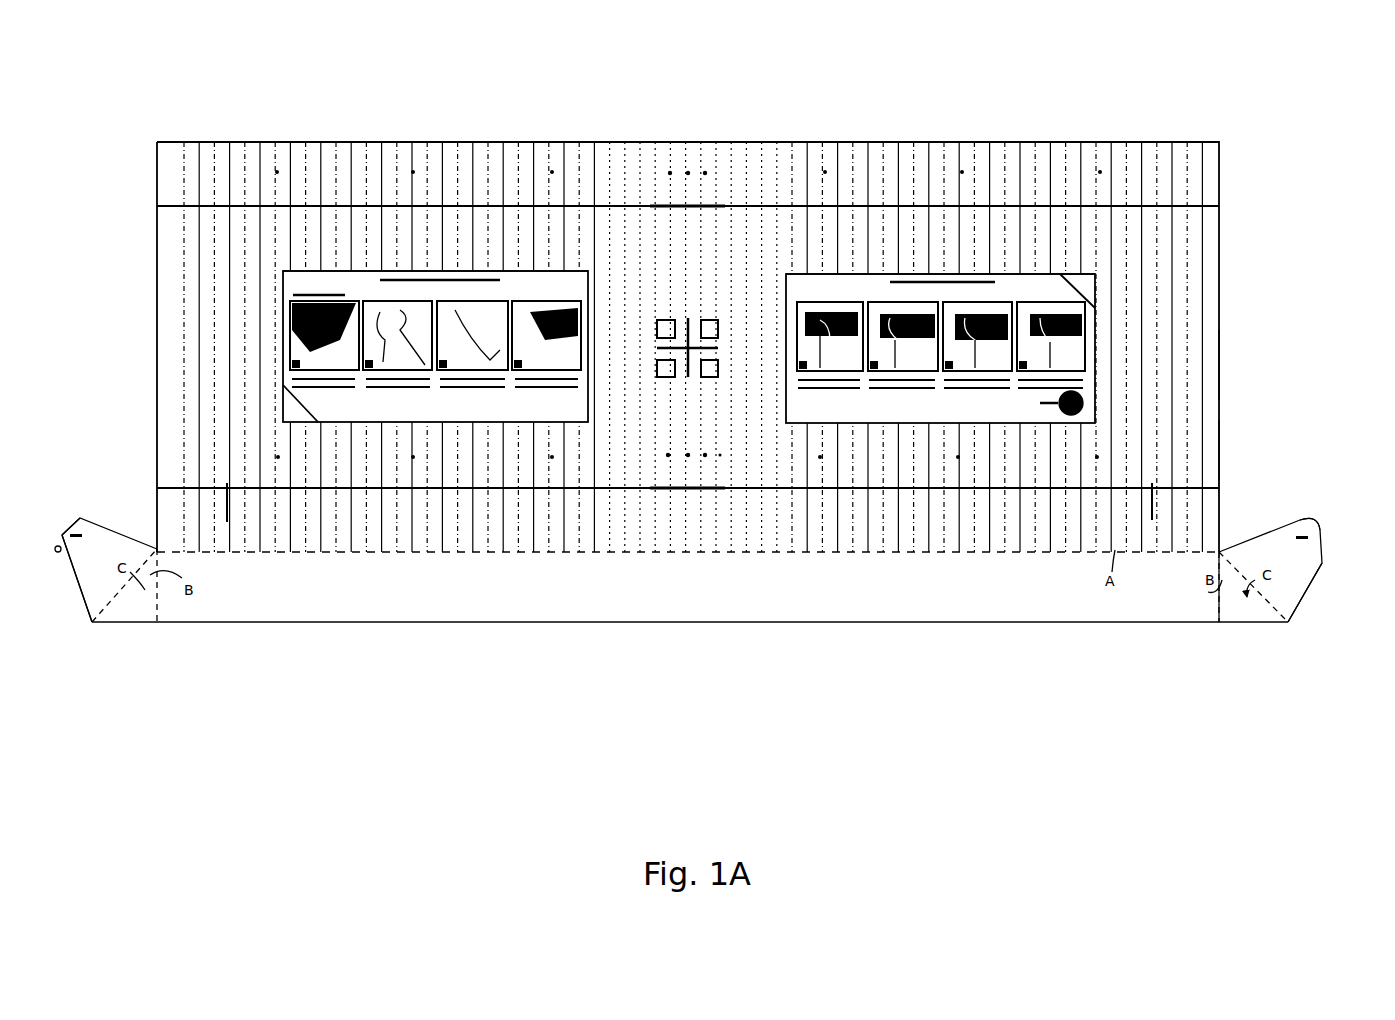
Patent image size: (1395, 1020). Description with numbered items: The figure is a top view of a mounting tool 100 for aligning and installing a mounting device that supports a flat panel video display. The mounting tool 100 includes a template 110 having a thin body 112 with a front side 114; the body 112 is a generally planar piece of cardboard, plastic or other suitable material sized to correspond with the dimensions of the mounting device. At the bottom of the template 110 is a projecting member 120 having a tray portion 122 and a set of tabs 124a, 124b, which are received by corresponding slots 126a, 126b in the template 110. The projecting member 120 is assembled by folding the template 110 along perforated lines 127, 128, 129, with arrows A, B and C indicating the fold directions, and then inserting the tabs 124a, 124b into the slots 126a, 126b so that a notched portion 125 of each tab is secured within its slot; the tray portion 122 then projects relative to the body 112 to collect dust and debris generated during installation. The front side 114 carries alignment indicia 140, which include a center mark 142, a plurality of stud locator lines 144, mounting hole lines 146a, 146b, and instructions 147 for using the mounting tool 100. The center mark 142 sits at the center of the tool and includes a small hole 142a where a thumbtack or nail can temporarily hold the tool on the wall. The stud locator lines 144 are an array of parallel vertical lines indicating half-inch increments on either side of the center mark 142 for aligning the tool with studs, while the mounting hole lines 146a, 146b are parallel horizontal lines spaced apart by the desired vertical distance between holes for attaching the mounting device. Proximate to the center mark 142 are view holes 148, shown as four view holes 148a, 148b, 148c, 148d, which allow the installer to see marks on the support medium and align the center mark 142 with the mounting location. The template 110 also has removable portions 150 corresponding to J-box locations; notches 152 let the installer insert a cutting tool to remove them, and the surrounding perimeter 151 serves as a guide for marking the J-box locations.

The mounting tool 100 is at (1255, 88).
The template 110 is at (1220, 325).
The body 112 is at (1208, 382).
The front side 114 is at (1208, 448).
The projecting member 120 is at (138, 632).
The tray portion 122 is at (685, 600).
The tab 124a is at (82, 602).
The tab 124b is at (1303, 575).
The notched portion 125 is at (54, 550).
The slot 126a is at (227, 495).
The slot 126b is at (1152, 518).
The perforated line 127 is at (1082, 555).
The perforated line 128 is at (157, 598).
The perforated line 129 is at (135, 585).
The alignment indicia 140 is at (195, 175).
The center mark 142 is at (688, 345).
The small hole 142a is at (692, 345).
The stud locator lines 144 is at (612, 160).
The mounting hole line 146a is at (882, 206).
The mounting hole line 146b is at (925, 490).
The instructions 147 is at (372, 292).
The view holes 148 is at (692, 266).
The view hole 148a is at (657, 325).
The view hole 148b is at (718, 322).
The view hole 148c is at (657, 377).
The view hole 148d is at (718, 377).
The removable portions 150 is at (445, 287).
The perimeter 151 is at (503, 271).
The notches 152 is at (288, 425).